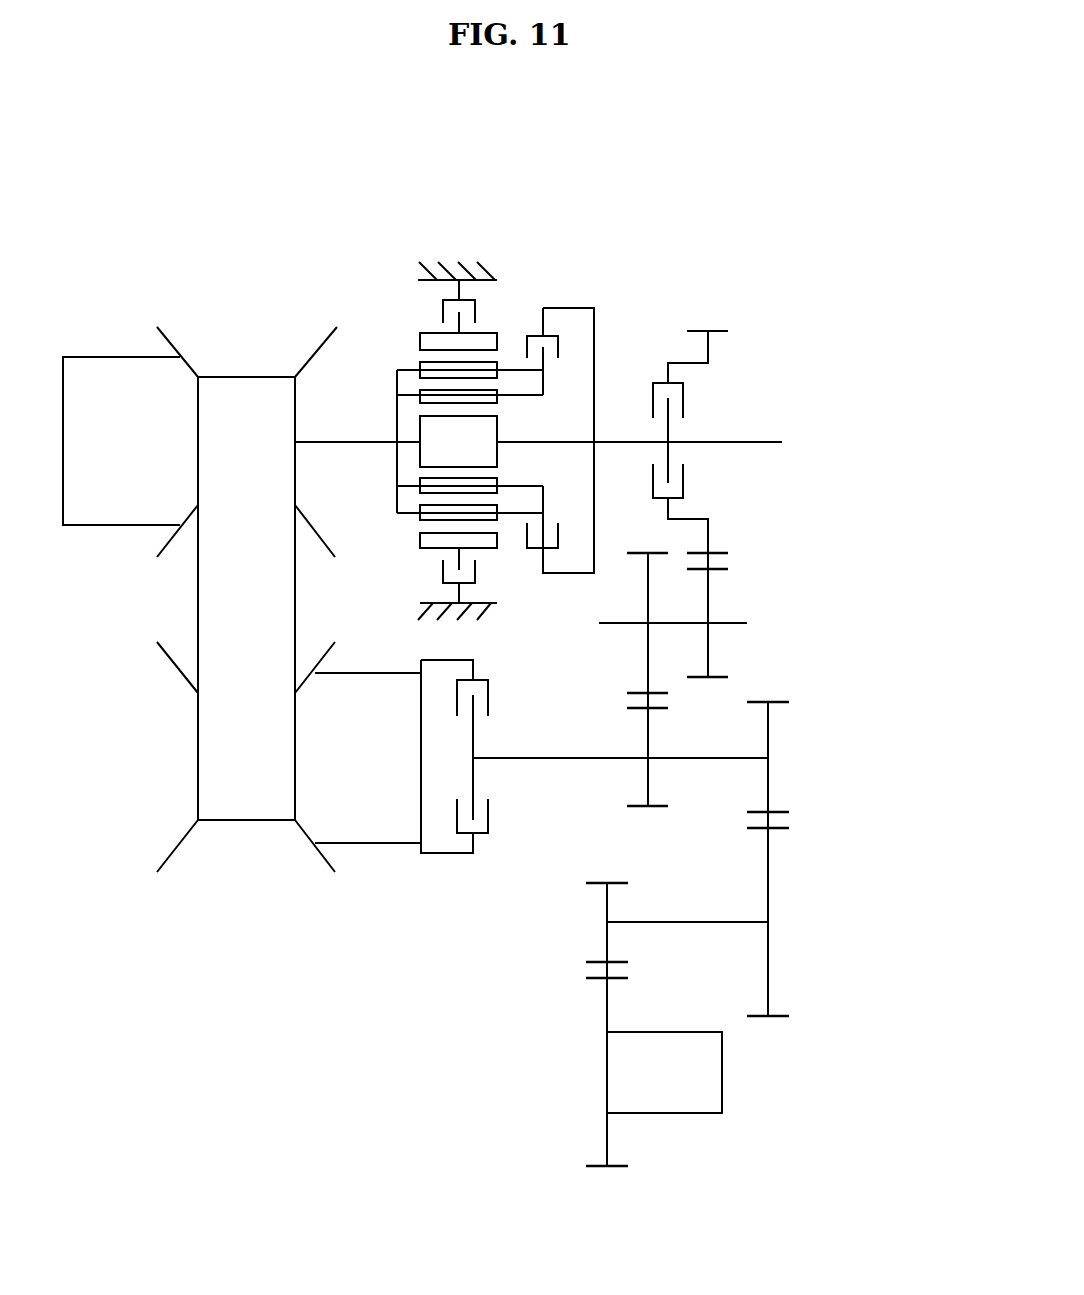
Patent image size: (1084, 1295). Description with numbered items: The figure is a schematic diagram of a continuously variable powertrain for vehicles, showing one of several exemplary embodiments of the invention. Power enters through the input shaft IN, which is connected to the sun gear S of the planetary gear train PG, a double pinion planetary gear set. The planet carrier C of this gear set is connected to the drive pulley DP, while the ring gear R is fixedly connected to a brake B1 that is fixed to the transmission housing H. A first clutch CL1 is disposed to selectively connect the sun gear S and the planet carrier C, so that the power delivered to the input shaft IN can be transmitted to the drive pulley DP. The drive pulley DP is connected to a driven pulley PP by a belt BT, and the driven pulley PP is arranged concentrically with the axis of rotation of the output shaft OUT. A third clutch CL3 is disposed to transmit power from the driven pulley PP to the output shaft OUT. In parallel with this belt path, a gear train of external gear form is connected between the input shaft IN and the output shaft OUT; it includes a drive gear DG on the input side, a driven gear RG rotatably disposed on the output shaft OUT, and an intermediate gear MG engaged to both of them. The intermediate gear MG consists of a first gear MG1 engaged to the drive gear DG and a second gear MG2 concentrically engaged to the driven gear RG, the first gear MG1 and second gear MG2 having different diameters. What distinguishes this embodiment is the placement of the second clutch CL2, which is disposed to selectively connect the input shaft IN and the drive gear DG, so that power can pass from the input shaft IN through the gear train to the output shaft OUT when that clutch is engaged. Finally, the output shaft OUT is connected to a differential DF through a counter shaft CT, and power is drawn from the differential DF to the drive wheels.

The drive pulley DP is at (170, 341).
The belt BT is at (210, 592).
The driven pulley PP is at (176, 853).
The input shaft IN is at (747, 441).
The planetary gear train PG is at (409, 389).
The ring gear R is at (495, 330).
The sun gear S is at (425, 456).
The planet carrier C is at (397, 385).
The transmission housing H is at (452, 262).
The brake B1 is at (435, 298).
The first clutch CL1 is at (558, 322).
The second clutch CL2 is at (658, 370).
The third clutch CL3 is at (449, 840).
The drive gear DG is at (720, 547).
The intermediate gear MG is at (770, 655).
The first gear MG1 is at (720, 569).
The second gear MG2 is at (662, 694).
The output shaft OUT is at (732, 757).
The driven gear RG is at (658, 807).
The counter shaft CT is at (771, 921).
The differential DF is at (722, 1078).